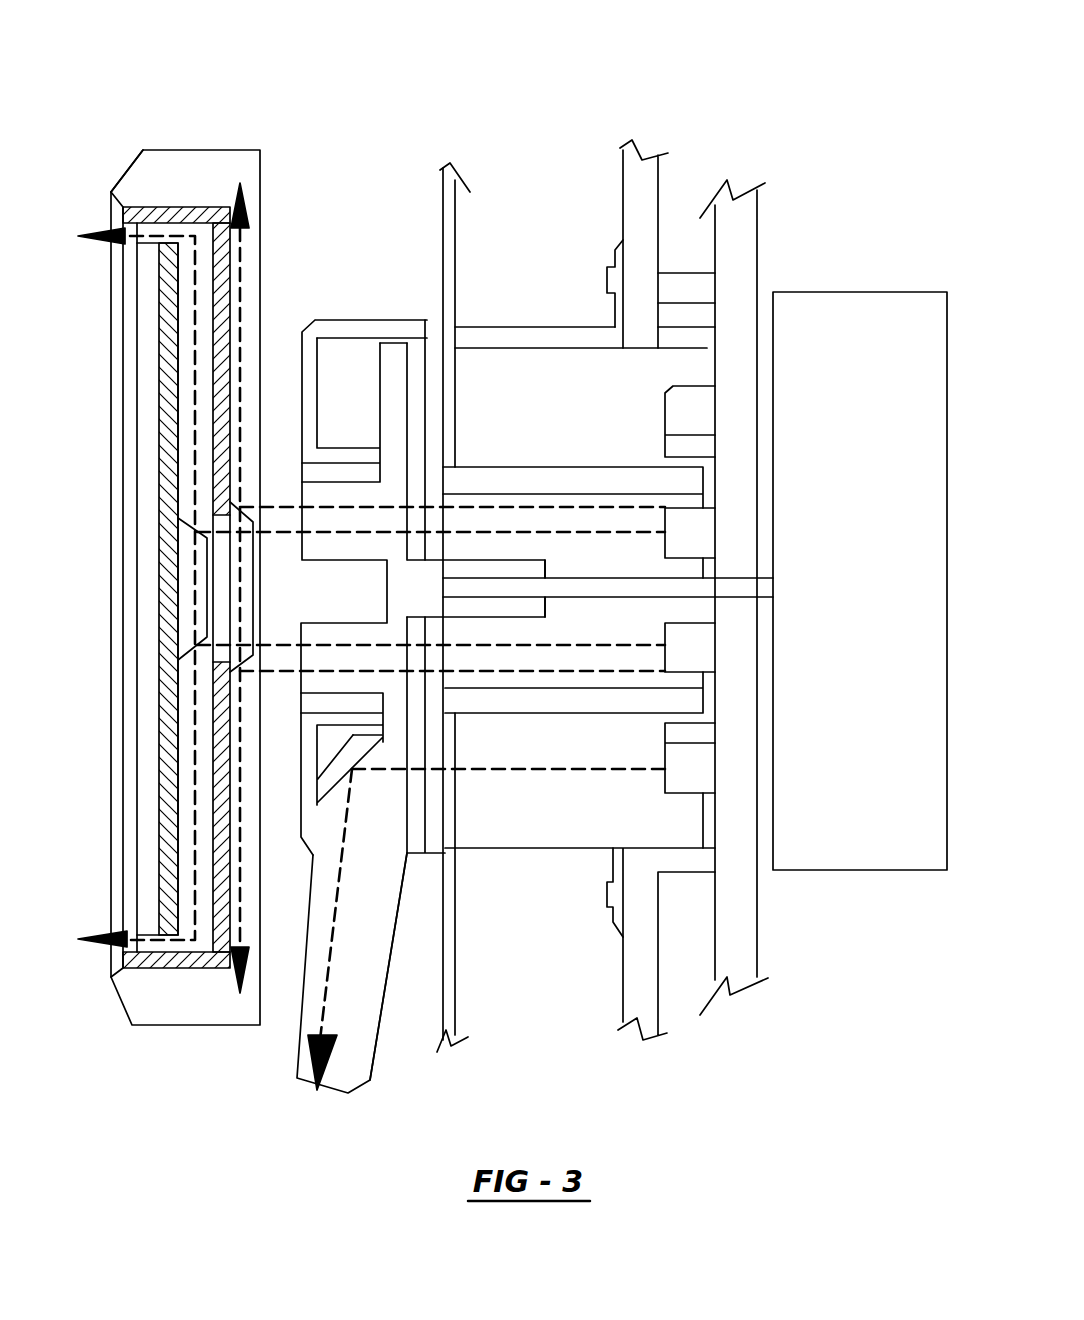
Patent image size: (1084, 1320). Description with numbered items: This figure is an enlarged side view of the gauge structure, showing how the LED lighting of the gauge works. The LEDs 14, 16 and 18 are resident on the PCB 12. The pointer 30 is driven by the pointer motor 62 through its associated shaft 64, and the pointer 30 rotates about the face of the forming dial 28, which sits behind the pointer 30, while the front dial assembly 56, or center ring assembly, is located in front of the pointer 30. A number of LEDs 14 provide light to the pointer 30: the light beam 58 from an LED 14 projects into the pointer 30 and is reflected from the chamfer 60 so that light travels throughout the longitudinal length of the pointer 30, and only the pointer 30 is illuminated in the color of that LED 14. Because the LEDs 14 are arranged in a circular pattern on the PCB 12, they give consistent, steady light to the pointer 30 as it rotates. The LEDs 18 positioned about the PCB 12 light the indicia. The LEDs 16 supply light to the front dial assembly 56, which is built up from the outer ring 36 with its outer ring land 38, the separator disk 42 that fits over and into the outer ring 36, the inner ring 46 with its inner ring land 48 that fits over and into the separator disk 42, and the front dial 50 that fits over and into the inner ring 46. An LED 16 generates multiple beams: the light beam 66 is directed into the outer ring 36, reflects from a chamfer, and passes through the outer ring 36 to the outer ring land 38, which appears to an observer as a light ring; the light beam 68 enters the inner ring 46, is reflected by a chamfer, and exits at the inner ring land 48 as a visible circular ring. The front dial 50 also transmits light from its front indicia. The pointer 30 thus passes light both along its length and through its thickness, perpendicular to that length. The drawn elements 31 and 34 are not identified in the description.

The PCB 12 is at (740, 948).
The LEDs 14 is at (693, 405).
The LEDs 16 is at (697, 532).
The LEDs 18 is at (688, 273).
The forming dial 28 is at (442, 207).
The pointer 30 is at (300, 1053).
The lever arm 31 is at (380, 1027).
The flange hub 34 is at (378, 322).
The outer ring 36 is at (195, 148).
The outer ring land 38 is at (123, 170).
The separator disk 42 is at (212, 212).
The inner ring 46 is at (172, 214).
The inner ring land 48 is at (122, 234).
The front dial 50 is at (170, 318).
The front dial assembly 56 is at (145, 1046).
The light beam 58 is at (528, 772).
The chamfer 60 is at (368, 752).
The pointer motor 62 is at (920, 290).
The shaft 64 is at (733, 593).
The light beam 66 is at (257, 675).
The light beam 68 is at (186, 655).